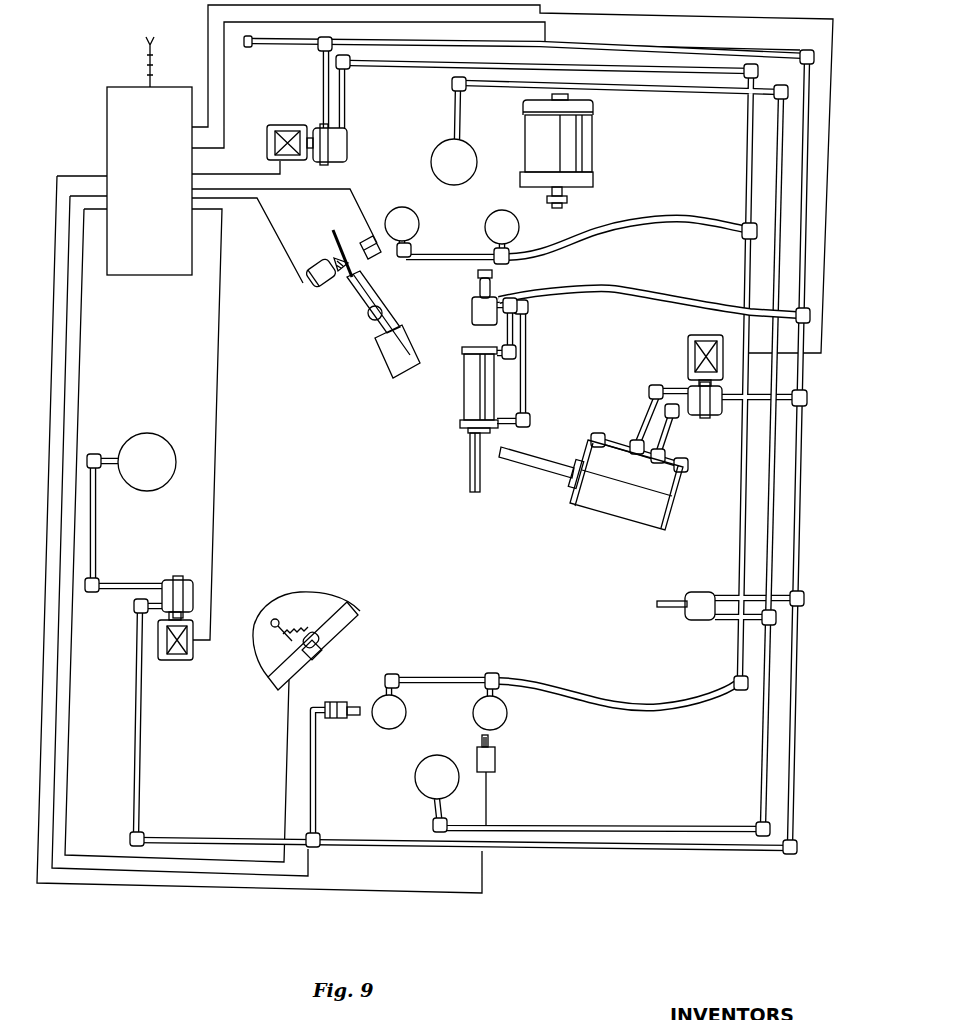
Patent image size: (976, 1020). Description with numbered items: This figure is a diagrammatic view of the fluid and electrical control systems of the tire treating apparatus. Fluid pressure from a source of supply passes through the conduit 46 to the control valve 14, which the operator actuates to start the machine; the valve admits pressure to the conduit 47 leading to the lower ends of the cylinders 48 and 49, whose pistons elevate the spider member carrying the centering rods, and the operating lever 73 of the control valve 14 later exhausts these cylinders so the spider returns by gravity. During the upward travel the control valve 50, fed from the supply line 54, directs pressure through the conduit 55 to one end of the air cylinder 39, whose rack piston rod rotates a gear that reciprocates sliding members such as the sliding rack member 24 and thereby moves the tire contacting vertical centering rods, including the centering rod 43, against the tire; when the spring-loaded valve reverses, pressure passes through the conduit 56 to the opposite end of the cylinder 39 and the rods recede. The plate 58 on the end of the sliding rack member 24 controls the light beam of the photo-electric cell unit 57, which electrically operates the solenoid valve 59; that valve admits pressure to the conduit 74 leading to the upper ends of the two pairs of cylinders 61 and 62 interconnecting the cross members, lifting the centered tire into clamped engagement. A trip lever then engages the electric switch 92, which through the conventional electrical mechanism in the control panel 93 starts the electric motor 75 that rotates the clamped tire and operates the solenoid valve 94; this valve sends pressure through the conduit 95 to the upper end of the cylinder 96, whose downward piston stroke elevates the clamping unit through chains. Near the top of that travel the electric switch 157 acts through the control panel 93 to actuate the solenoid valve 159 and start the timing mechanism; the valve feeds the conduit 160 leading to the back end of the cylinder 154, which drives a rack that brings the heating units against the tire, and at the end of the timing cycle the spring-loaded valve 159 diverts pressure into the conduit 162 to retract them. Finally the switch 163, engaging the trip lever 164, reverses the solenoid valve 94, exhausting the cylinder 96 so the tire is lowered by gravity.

The control panel 93 is at (122, 98).
The conduit 74 is at (398, 65).
The solenoid valve 59 is at (348, 132).
The cylinder 48 is at (437, 150).
The electric motor 75 is at (575, 138).
The cylinders 62 is at (491, 217).
The plate 58 is at (332, 236).
The photo-electric cell unit 57 is at (322, 282).
The tire contacting vertical centering rod 43 is at (372, 315).
The sliding rack member 24 is at (378, 330).
The control valve 50 is at (472, 304).
The conduit 55 is at (513, 338).
The conduit 56 is at (527, 368).
The supply line 54 is at (605, 292).
The air cylinder 39 is at (470, 385).
The solenoid valve 159 is at (692, 388).
The conduit 162 is at (648, 410).
The conduit 160 is at (665, 428).
The cylinder 154 is at (623, 493).
The cylinder 96 is at (150, 432).
The conduit 95 is at (97, 517).
The solenoid valve 94 is at (192, 593).
The operating lever 73 is at (668, 603).
The control valve 14 is at (702, 617).
The trip lever 164 is at (263, 662).
The switch 163 is at (320, 648).
The electric switch 157 is at (343, 720).
The cylinders 61 is at (506, 718).
The cylinder 49 is at (417, 772).
The electric switch 92 is at (494, 760).
The conduit 47 is at (765, 733).
The conduit 46 is at (742, 853).